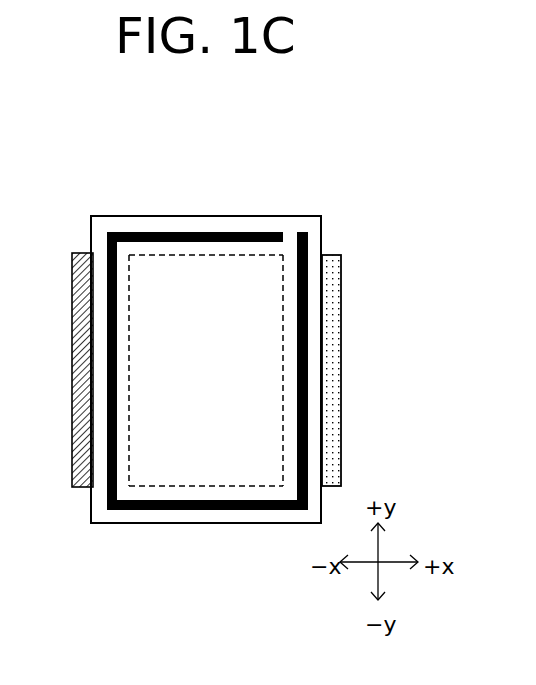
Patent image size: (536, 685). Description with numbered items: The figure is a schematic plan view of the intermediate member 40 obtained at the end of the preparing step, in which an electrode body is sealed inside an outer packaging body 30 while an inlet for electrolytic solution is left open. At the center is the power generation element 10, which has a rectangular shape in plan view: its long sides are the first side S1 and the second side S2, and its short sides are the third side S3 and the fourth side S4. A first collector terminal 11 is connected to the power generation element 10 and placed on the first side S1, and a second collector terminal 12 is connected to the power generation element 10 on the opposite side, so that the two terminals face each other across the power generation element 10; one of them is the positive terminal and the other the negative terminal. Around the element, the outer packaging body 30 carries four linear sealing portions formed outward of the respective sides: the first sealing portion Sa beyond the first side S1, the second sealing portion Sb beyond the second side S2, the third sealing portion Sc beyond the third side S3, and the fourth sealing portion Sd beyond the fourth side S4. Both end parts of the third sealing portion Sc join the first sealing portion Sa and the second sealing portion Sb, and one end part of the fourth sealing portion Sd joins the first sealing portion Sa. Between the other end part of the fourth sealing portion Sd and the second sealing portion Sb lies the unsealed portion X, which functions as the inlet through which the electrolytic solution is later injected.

The intermediate member 40 is at (298, 139).
The outer packaging body 30 is at (313, 234).
The power generation element 10 is at (268, 348).
The first collector terminal 11 is at (72, 387).
The second collector terminal 12 is at (330, 386).
The unsealed portion X is at (291, 238).
The first side S1 is at (130, 296).
The second side S2 is at (283, 297).
The third side S3 is at (195, 487).
The fourth side S4 is at (195, 258).
The first sealing portion Sa is at (107, 312).
The second sealing portion Sb is at (308, 310).
The third sealing portion Sc is at (233, 500).
The fourth sealing portion Sd is at (232, 237).